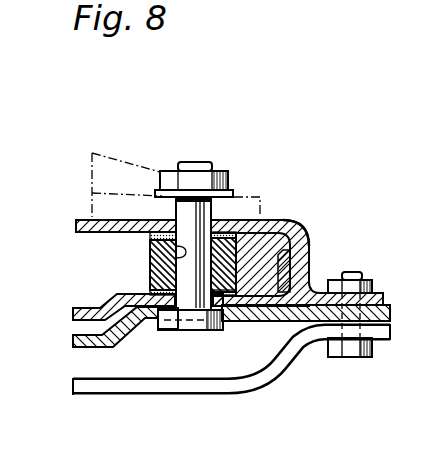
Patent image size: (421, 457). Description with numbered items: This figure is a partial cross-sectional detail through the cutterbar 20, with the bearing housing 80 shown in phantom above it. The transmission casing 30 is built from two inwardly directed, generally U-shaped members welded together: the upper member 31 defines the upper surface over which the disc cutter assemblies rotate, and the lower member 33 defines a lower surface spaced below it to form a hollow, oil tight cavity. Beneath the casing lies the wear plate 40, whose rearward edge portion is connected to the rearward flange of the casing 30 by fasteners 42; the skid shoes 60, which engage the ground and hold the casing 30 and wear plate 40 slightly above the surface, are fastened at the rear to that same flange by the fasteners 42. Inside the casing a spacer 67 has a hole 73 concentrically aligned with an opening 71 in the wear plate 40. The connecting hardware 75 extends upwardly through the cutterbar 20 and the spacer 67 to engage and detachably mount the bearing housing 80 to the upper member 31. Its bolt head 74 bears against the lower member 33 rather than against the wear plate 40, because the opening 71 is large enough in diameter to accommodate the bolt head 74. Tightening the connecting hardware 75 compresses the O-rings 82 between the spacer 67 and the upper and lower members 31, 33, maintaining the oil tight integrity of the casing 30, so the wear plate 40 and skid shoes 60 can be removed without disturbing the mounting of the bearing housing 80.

The cutterbar 20 is at (317, 189).
The transmission casing 30 is at (324, 256).
The upper member 31 is at (306, 241).
The lower member 33 is at (73, 315).
The wear plate 40 is at (274, 318).
The fasteners 42 is at (343, 358).
The skid shoes 60 is at (225, 387).
The spacer 67 is at (234, 259).
The opening 71 is at (155, 328).
The hole 73 is at (150, 268).
The bolt head 74 is at (190, 331).
The connecting hardware 75 is at (228, 178).
The bearing housing 80 is at (112, 152).
The O-rings 82 is at (149, 240).